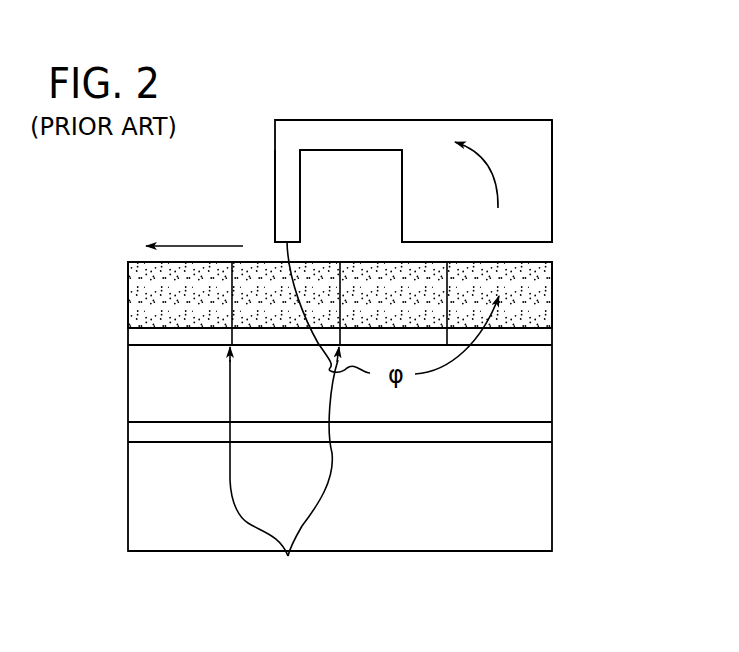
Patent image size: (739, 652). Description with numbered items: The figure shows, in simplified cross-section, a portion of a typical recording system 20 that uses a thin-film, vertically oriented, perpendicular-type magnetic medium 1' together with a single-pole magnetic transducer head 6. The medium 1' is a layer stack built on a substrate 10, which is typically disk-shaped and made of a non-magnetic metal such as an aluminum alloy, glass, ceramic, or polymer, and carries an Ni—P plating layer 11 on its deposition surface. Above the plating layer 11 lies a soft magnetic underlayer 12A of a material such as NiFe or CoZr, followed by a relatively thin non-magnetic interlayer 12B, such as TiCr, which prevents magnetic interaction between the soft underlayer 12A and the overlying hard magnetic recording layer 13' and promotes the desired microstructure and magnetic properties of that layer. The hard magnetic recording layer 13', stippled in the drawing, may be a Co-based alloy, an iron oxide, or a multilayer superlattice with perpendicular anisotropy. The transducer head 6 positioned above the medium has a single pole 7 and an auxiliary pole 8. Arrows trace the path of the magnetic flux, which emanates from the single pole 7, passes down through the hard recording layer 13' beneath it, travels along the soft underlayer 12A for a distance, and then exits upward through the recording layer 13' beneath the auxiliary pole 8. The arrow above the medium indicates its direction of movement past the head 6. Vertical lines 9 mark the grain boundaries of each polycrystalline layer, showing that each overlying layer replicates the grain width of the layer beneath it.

The recording system 20 is at (557, 93).
The single-pole magnetic transducer head 6 is at (332, 114).
The single pole 7 is at (275, 177).
The auxiliary pole 8 is at (552, 185).
The perpendicular-type magnetic medium 1' is at (307, 395).
The hard magnetic recording layer 13' is at (378, 303).
The non-magnetic interlayer 12B is at (552, 340).
The soft magnetic underlayer 12A is at (552, 388).
The plating layer 11 is at (552, 434).
The substrate 10 is at (552, 505).
The grain boundaries 9 is at (288, 556).